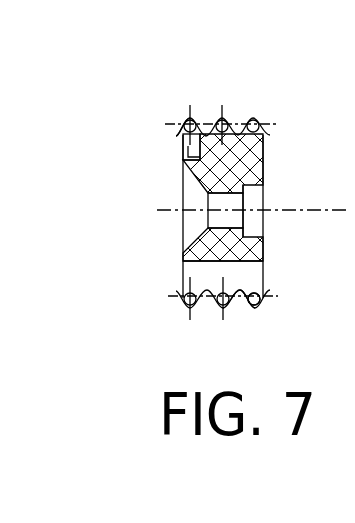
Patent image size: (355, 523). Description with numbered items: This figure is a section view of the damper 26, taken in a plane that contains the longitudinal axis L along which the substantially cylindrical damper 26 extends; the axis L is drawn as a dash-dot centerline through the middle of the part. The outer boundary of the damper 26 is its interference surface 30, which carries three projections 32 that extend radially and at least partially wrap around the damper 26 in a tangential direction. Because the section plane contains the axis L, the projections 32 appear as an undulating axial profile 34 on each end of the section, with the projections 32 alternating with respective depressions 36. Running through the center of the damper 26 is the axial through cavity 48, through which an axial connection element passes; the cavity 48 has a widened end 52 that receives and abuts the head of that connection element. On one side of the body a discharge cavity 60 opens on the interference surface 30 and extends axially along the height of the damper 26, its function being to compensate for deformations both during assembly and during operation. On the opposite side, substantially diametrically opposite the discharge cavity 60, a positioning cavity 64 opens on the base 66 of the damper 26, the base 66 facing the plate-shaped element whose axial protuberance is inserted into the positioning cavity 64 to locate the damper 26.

The damper 26 is at (248, 106).
The interference surface 30 is at (254, 313).
The projection 32 is at (186, 118).
The undulating axial profile 34 is at (240, 303).
The depression 36 is at (266, 140).
The axial through cavity 48 is at (234, 225).
The widened end 52 is at (256, 190).
The discharge cavity 60 is at (236, 262).
The positioning cavity 64 is at (182, 153).
The base 66 is at (180, 136).
The longitudinal axis L is at (160, 212).